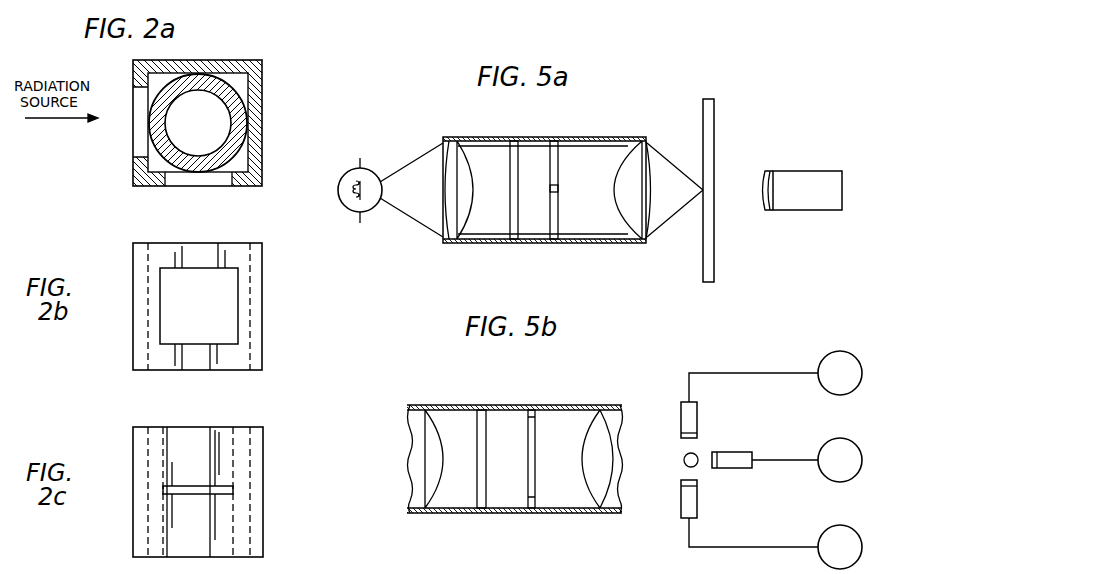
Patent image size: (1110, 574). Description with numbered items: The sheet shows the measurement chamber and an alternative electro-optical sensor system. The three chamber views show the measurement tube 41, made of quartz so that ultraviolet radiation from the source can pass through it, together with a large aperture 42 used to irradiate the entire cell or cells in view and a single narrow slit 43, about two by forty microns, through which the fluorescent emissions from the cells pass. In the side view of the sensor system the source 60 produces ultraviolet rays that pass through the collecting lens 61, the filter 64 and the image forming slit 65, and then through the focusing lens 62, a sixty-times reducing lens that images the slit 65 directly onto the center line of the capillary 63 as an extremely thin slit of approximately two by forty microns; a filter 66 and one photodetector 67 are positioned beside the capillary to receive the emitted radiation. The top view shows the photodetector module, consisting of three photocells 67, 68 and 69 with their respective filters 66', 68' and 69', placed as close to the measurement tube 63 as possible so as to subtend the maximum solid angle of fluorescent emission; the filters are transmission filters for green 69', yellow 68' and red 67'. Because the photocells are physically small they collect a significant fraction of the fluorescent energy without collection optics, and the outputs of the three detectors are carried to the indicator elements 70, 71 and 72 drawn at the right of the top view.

In FIG. 2A, the measurement tube 41 is at (232, 98).
In FIG. 2B, the large aperture 42 is at (221, 296).
In FIG. 2C, the single slit 43 is at (228, 492).
In FIG. 5A, the source 60 is at (352, 172).
In FIG. 5A, the collecting lens 61 is at (462, 164).
In FIG. 5B, the collecting lens 61 is at (432, 418).
In FIG. 5A, the focusing lens 62 is at (632, 160).
In FIG. 5B, the focusing lens 62 is at (600, 423).
In FIG. 5A, the capillary 63 is at (716, 108).
In FIG. 5B, the capillary 63 is at (684, 455).
In FIG. 5A, the filter 64 is at (515, 218).
In FIG. 5B, the filter 64 is at (486, 418).
In FIG. 5A, the image forming slit 65 is at (557, 220).
In FIG. 5B, the image forming slit 65 is at (535, 425).
In FIG. 5A, the filter 66 is at (777, 165).
In FIG. 5A, the photodetector 67 is at (813, 167).
In FIG. 5B, the filter 66' is at (732, 484).
In FIG. 5B, the red transmission filter 67' is at (756, 475).
In FIG. 5B, the photocell 68 is at (668, 500).
In FIG. 5B, the yellow transmission filter 68' is at (664, 473).
In FIG. 5B, the photocell 69 is at (713, 406).
In FIG. 5B, the green transmission filter 69' is at (723, 420).
In FIG. 5B, the indicator 70 is at (855, 357).
In FIG. 5B, the indicator 71 is at (855, 444).
In FIG. 5B, the indicator 72 is at (855, 531).